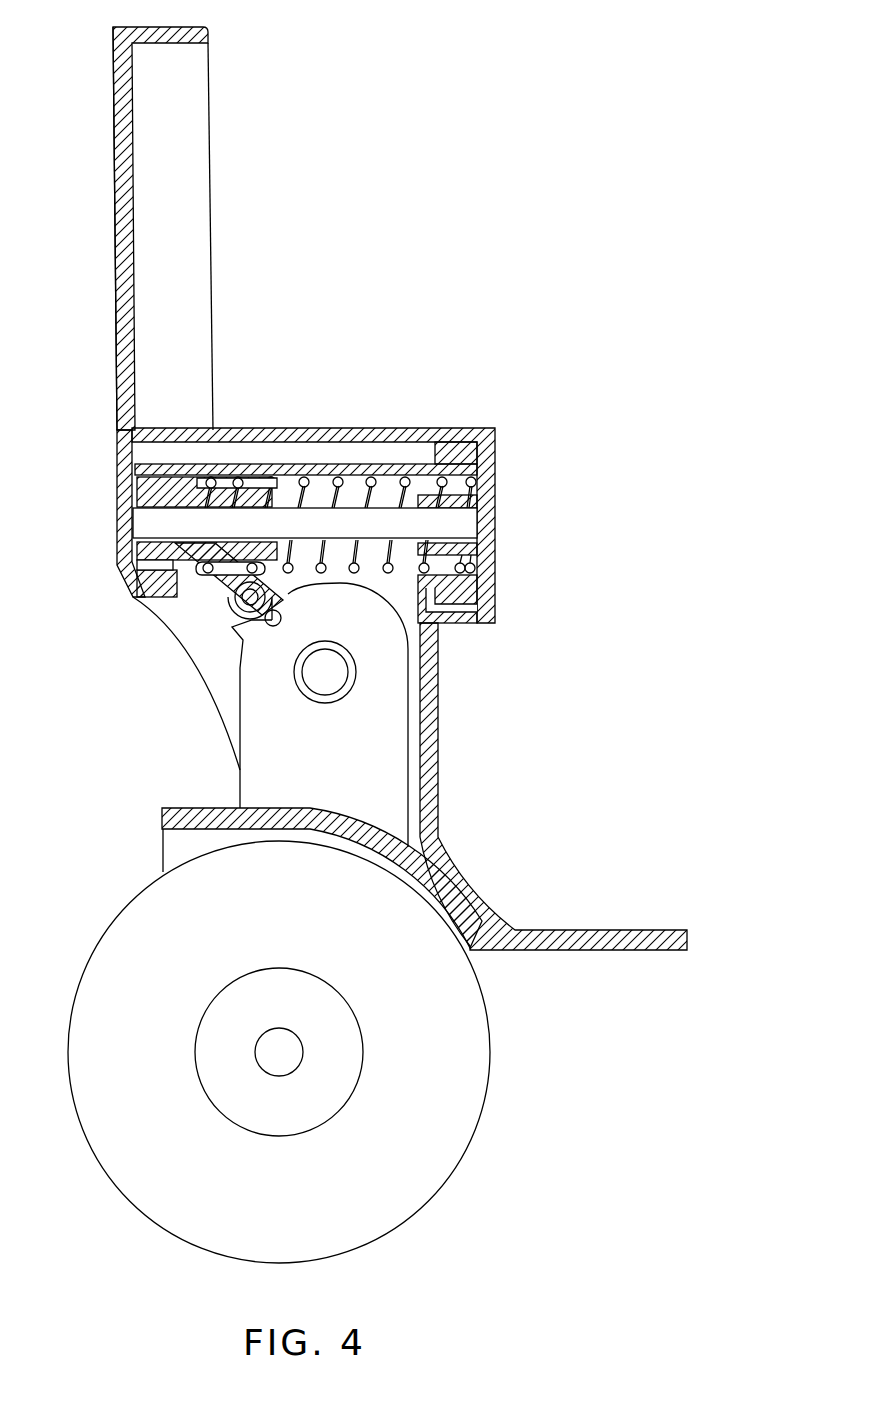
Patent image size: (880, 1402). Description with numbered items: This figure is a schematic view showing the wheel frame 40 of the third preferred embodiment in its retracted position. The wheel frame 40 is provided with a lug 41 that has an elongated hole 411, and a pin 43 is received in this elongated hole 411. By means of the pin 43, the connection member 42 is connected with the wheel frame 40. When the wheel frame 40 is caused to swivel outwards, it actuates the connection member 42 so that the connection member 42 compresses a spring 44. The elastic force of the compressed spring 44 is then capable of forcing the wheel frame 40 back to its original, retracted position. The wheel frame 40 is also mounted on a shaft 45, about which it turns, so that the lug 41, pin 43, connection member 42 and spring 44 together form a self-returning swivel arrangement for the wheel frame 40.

The wheel frame 40 is at (385, 784).
The lug 41 is at (232, 627).
The elongated hole 411 is at (238, 667).
The connection member 42 is at (177, 583).
The pin 43 is at (227, 604).
The spring 44 is at (387, 570).
The shaft 45 is at (335, 676).